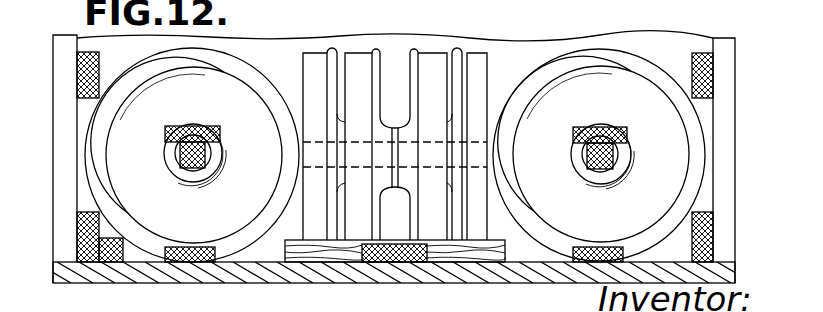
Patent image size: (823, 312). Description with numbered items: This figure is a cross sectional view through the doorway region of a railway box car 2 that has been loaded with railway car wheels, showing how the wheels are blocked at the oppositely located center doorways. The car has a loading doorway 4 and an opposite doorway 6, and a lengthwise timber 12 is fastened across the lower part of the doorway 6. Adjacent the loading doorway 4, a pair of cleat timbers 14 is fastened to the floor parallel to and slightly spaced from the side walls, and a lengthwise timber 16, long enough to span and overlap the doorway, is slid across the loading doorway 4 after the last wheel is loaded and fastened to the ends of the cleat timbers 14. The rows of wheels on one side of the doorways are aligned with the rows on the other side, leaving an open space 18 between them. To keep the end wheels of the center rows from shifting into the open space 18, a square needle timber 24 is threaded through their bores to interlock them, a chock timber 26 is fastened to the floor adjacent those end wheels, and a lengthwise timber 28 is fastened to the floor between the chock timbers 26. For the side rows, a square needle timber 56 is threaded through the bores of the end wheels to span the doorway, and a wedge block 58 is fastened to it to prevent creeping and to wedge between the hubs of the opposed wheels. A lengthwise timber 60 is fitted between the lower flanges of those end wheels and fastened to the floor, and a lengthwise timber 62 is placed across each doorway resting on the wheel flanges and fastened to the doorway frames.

The railway box car 2 is at (246, 272).
The loading doorway 4 is at (62, 178).
The doorway 6 is at (722, 188).
The lengthwise timber 12 is at (713, 228).
The cleat timbers 14 is at (105, 262).
The lengthwise timber 16 is at (78, 225).
The open space 18 is at (528, 262).
The square needle timber 24 is at (487, 142).
The chock timber 26 is at (320, 252).
The lengthwise timber 28 is at (405, 252).
The square needle timber 56 is at (182, 158).
The wedge block 58 is at (210, 128).
The lengthwise timber 60 is at (196, 247).
The lengthwise timber 62 is at (82, 67).